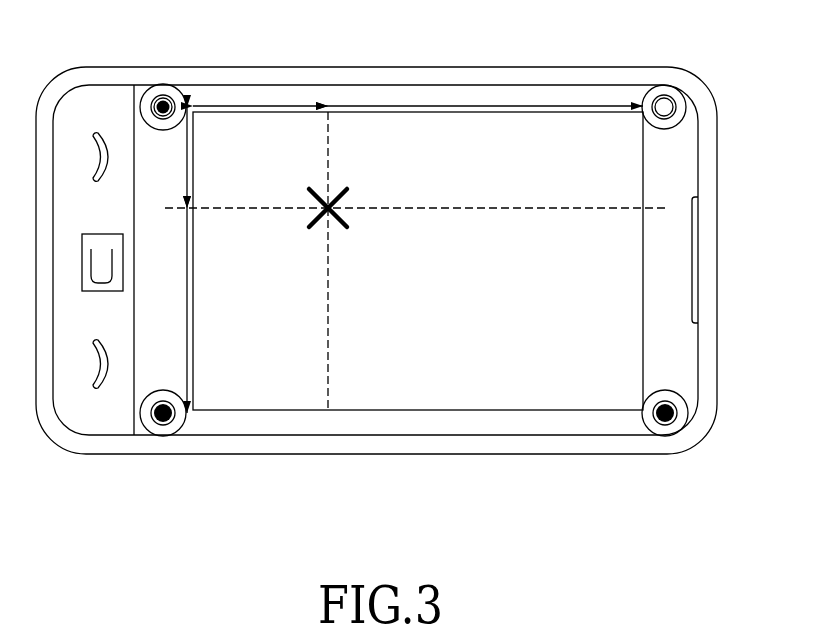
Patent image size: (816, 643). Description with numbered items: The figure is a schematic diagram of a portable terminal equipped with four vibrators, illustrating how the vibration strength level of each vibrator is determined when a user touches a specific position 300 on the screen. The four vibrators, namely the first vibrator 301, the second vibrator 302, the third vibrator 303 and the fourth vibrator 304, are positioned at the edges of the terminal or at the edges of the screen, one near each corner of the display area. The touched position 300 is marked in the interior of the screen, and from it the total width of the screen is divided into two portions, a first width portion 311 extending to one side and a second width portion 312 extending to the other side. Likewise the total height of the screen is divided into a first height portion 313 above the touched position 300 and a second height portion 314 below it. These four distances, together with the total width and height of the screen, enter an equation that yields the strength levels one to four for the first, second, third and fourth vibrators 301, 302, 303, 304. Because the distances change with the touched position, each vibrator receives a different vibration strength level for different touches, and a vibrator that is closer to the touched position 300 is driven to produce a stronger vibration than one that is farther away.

The touched position 300 is at (340, 206).
The vibrator V1 301 is at (172, 86).
The vibrator V2 302 is at (165, 436).
The vibrator V3 303 is at (712, 68).
The vibrator V4 304 is at (668, 436).
The width portion m1 311 is at (260, 118).
The width portion m2 312 is at (485, 119).
The height portion m3 313 is at (229, 157).
The height portion m4 314 is at (231, 310).